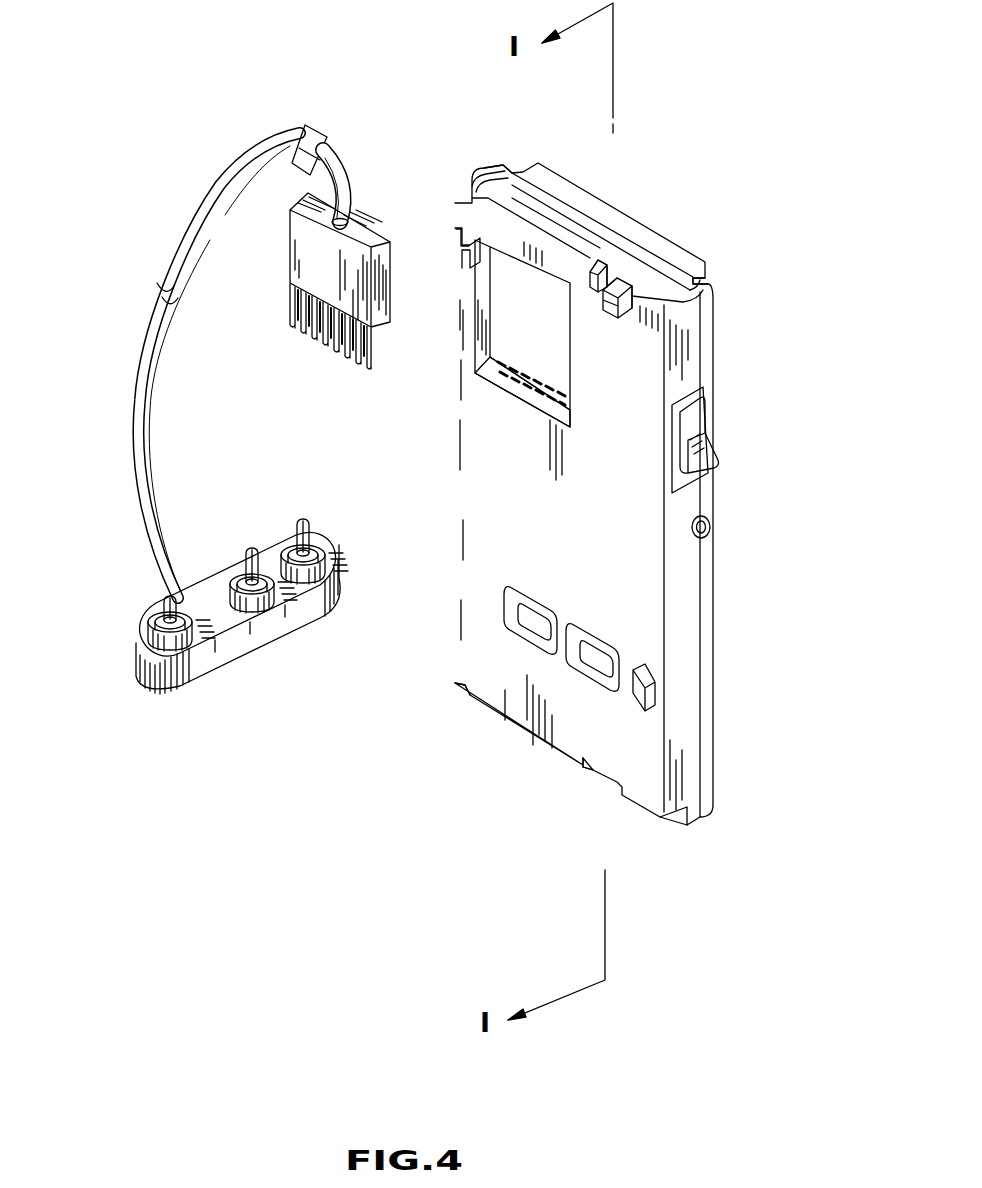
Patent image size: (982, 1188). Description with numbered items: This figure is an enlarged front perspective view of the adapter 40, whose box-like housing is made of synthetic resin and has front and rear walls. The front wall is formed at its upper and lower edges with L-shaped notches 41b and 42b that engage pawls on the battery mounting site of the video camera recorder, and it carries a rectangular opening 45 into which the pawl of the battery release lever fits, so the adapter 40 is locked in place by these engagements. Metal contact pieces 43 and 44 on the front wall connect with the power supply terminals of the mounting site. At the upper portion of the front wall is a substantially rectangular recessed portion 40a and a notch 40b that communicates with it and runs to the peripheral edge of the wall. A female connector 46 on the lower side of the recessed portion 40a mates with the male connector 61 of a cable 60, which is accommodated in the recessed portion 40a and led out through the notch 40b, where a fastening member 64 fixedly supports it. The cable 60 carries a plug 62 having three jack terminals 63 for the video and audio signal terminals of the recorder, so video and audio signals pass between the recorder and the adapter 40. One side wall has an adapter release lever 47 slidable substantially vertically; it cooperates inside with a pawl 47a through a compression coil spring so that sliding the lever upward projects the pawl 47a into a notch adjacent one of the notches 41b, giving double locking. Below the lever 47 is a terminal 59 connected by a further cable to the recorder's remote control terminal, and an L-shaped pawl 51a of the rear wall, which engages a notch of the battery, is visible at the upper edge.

The adapter 40 is at (576, 475).
The recessed portion 40a is at (570, 352).
The notch 40b is at (462, 226).
The L-shaped notch 41b is at (500, 207).
The L-shaped notch 42b is at (455, 688).
The metal contact piece 43 is at (537, 605).
The metal contact piece 44 is at (593, 648).
The rectangular opening 45 is at (647, 700).
The female connector 46 is at (527, 403).
The adapter release lever 47 is at (702, 425).
The pawl 47a is at (600, 262).
The L-shaped pawl 51a is at (710, 268).
The terminal 59 is at (712, 527).
The cable 60 is at (190, 275).
The male connector 61 is at (292, 253).
The plug 62 is at (213, 587).
The jack terminals 63 is at (168, 597).
The fastening member 64 is at (320, 128).